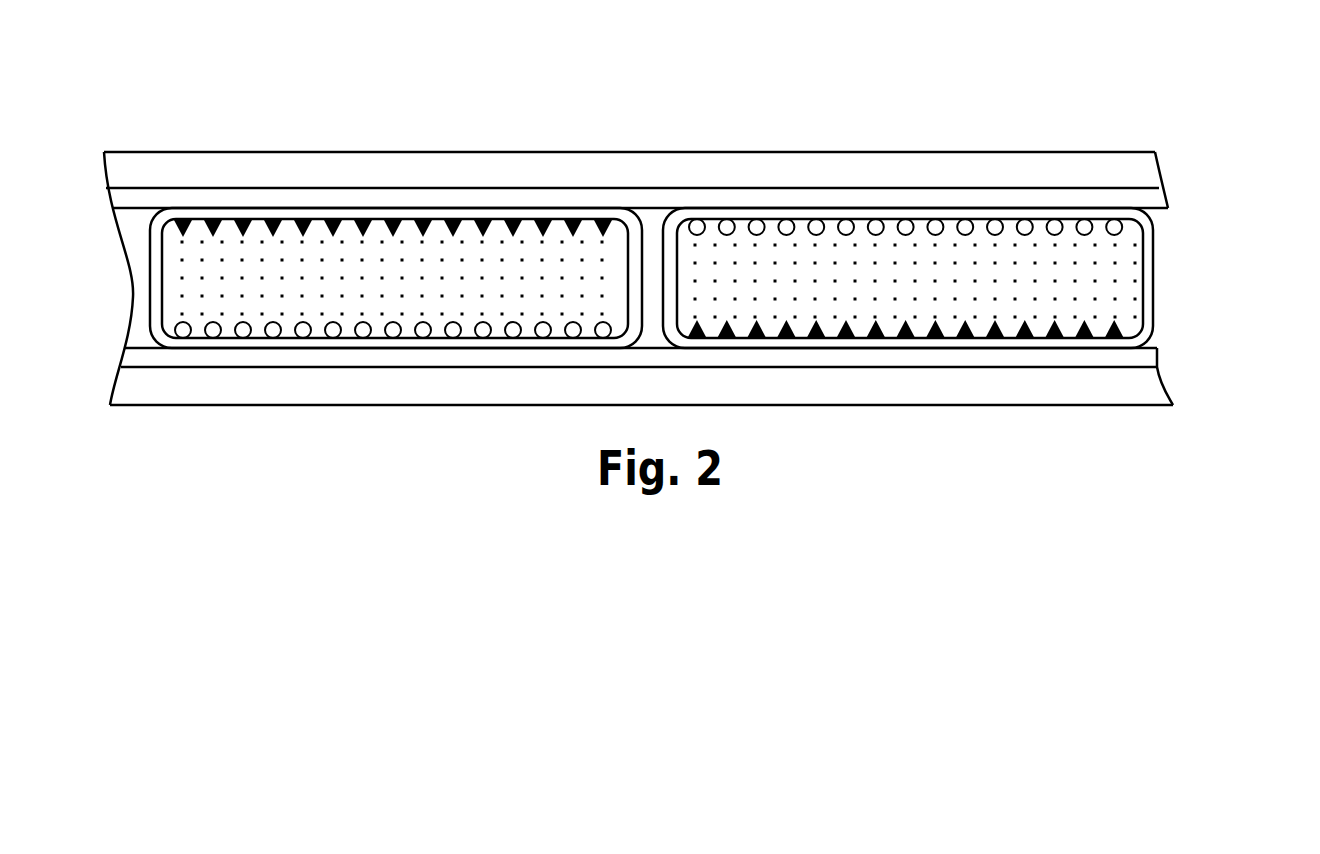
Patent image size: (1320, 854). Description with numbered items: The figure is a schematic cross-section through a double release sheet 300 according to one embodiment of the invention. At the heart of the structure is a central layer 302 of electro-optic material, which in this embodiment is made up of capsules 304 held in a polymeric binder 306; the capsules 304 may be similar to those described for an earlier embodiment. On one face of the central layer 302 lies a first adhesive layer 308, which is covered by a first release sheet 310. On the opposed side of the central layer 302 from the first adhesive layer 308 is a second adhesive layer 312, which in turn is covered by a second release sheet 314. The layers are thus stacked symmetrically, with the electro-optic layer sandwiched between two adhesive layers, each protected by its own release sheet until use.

The double release sheet 300 is at (307, 158).
The central layer 302 is at (1172, 241).
The capsules 304 is at (634, 245).
The polymeric binder 306 is at (650, 272).
The first adhesive layer 308 is at (958, 200).
The first release sheet 310 is at (832, 165).
The second adhesive layer 312 is at (1153, 358).
The second release sheet 314 is at (1003, 387).